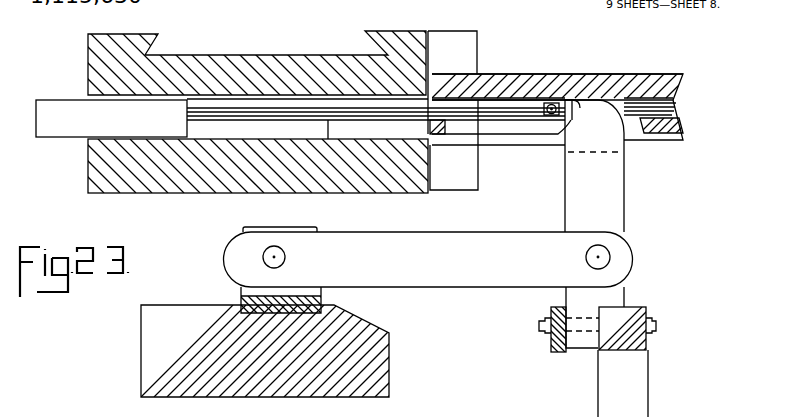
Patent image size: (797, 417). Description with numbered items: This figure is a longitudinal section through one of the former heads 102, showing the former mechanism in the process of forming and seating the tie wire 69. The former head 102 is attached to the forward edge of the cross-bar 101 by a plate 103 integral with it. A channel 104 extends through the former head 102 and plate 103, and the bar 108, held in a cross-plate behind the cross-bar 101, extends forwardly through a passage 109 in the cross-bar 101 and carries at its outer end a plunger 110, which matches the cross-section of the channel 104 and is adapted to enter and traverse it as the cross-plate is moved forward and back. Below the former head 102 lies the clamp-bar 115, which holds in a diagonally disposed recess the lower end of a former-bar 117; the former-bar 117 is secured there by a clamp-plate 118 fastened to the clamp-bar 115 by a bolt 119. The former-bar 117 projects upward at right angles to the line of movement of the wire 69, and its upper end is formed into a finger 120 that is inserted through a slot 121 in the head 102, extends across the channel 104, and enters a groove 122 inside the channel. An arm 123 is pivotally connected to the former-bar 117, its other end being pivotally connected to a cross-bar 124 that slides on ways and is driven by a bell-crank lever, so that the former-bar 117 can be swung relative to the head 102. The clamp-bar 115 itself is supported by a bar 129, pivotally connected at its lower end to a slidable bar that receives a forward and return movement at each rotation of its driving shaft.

The cross-bar 101 is at (178, 186).
The bars 108 is at (61, 108).
The passages 109 is at (254, 137).
The plungers 110 is at (336, 137).
The plates 103 is at (460, 37).
The grooves 122 is at (523, 75).
The former heads 102 is at (567, 74).
The fingers 120 is at (608, 75).
The channel 104 is at (657, 75).
The slots 121 is at (529, 135).
The wire 69 is at (555, 118).
The former-bars 117 is at (621, 200).
The arm 123 is at (442, 276).
The cross-bar 124 is at (389, 357).
The clamp-plate 118 is at (551, 343).
The clamp-bar 115 is at (647, 310).
The bolts 119 is at (657, 323).
The bars 129 is at (643, 387).